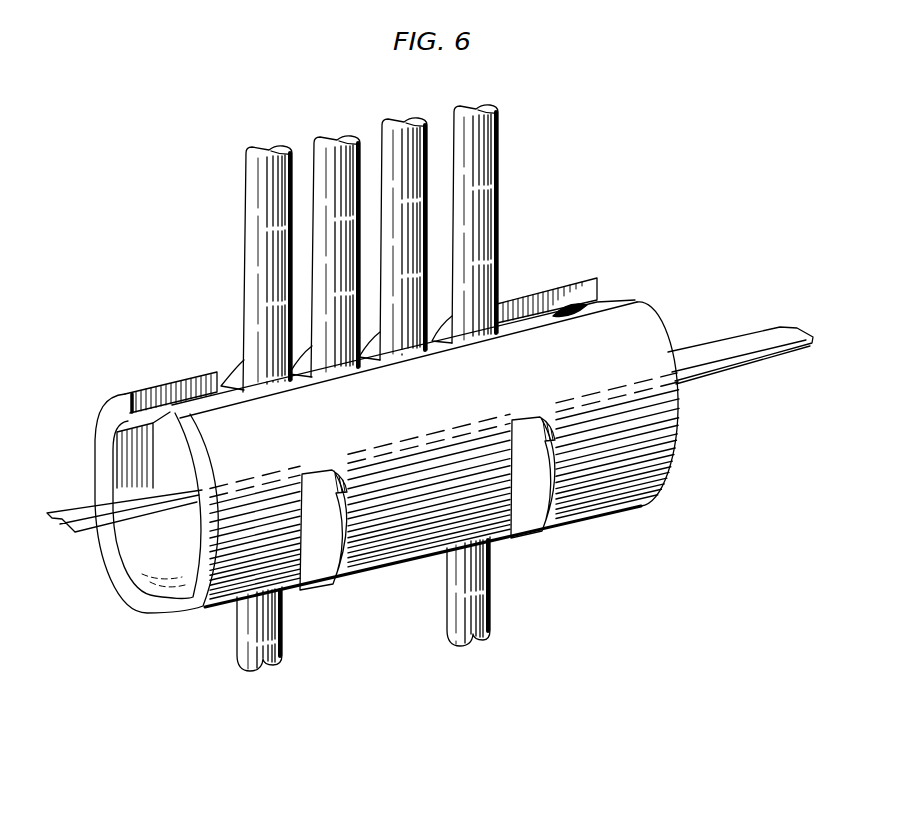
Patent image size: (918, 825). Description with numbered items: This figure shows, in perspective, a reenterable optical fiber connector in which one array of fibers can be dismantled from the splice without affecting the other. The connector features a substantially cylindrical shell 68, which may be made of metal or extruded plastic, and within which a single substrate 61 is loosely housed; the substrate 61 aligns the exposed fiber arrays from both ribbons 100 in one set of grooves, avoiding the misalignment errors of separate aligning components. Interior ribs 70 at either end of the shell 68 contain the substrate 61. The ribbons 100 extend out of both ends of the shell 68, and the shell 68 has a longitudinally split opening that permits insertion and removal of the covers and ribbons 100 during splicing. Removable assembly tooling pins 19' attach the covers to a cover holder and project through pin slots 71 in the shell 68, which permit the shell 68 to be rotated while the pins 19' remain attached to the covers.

The shell 68 is at (668, 430).
The interior ribs 70 is at (150, 583).
The substrate 61 is at (180, 530).
The ribbons 100 is at (77, 506).
The assembly tooling pins 19' is at (370, 388).
The pin slots 71 is at (241, 390).